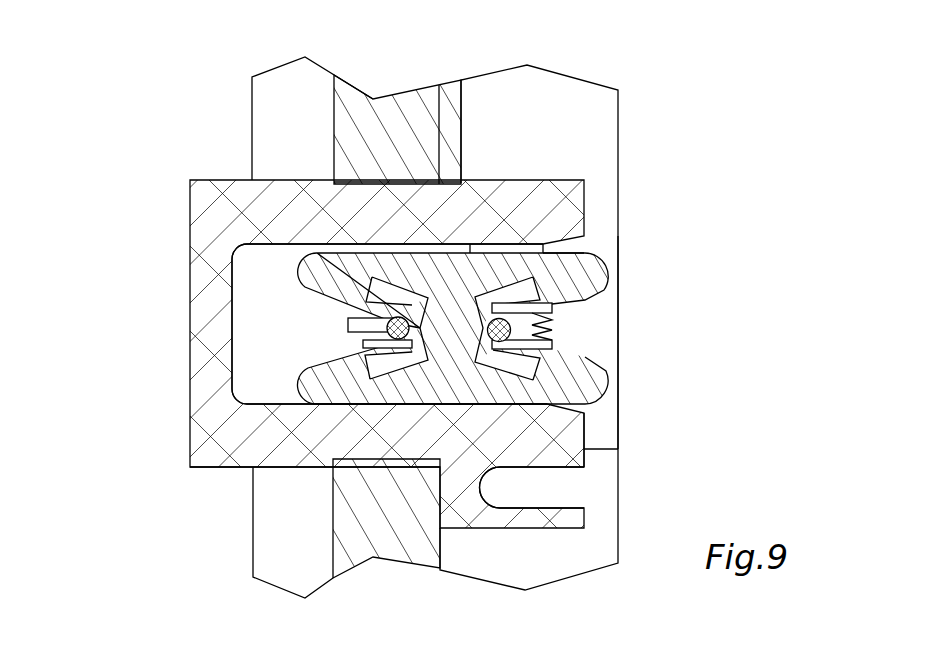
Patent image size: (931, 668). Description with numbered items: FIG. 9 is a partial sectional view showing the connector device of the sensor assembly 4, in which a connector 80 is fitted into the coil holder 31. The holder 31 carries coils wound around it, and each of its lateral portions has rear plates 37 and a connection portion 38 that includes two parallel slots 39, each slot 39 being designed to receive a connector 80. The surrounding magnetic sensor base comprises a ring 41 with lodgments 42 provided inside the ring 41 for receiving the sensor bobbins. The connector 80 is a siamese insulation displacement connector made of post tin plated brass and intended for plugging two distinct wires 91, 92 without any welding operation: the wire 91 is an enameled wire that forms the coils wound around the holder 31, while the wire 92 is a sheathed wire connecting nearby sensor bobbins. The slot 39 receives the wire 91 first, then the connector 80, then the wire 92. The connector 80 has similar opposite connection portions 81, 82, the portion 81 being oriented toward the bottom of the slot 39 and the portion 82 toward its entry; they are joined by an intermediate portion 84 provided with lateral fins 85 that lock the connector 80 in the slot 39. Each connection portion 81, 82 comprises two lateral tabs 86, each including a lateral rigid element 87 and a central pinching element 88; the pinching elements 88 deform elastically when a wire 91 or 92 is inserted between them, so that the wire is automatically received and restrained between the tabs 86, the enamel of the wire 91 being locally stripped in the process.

The connector assembly 4 is at (350, 299).
The holder 31 is at (464, 354).
The rear plate 37 is at (487, 134).
The connection portion 38 is at (262, 484).
The slot 39 is at (329, 368).
The ring 41 is at (336, 130).
The lodgment 42 is at (303, 182).
The connector 80 is at (731, 279).
The connection portion 81 is at (320, 287).
The connection portion 82 is at (663, 350).
The intermediate portion 84 is at (453, 474).
The lateral fin 85 is at (461, 256).
The lateral tab 86 is at (648, 374).
The lateral rigid element 87 is at (486, 485).
The central pinching element 88 is at (578, 345).
The wire 91 is at (285, 293).
The wire 92 is at (575, 307).